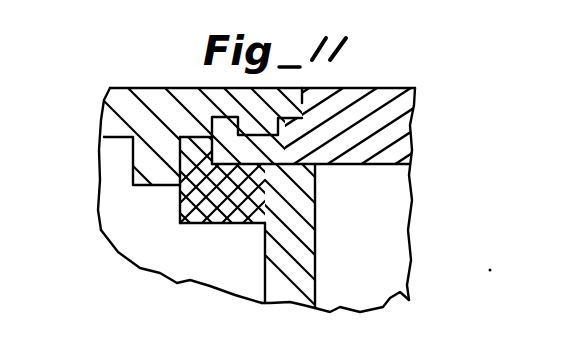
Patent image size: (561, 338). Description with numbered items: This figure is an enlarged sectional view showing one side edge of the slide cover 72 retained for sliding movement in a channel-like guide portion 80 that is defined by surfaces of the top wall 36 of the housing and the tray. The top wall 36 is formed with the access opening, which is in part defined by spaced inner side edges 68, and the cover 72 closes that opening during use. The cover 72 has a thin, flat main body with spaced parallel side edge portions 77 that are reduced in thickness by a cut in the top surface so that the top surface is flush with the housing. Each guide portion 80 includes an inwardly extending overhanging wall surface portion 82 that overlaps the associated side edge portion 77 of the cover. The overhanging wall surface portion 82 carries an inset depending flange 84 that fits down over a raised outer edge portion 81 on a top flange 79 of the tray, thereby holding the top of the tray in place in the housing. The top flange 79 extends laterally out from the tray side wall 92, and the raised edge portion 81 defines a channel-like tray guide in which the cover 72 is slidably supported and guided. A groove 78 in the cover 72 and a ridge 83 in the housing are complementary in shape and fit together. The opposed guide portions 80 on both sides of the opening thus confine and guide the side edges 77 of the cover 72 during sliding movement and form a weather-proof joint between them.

The top wall 36 is at (252, 118).
The inner side edges 68 is at (318, 110).
The slide cover 72 is at (395, 102).
The side edge portions 77 is at (215, 222).
The groove 78 is at (317, 178).
The top flange 79 is at (247, 223).
The guide portion 80 is at (212, 212).
The raised outer edge portion 81 is at (195, 199).
The overhanging wall surface portion 82 is at (324, 163).
The ridge 83 is at (250, 133).
The inset depending flange 84 is at (143, 162).
The side walls 92 is at (308, 270).